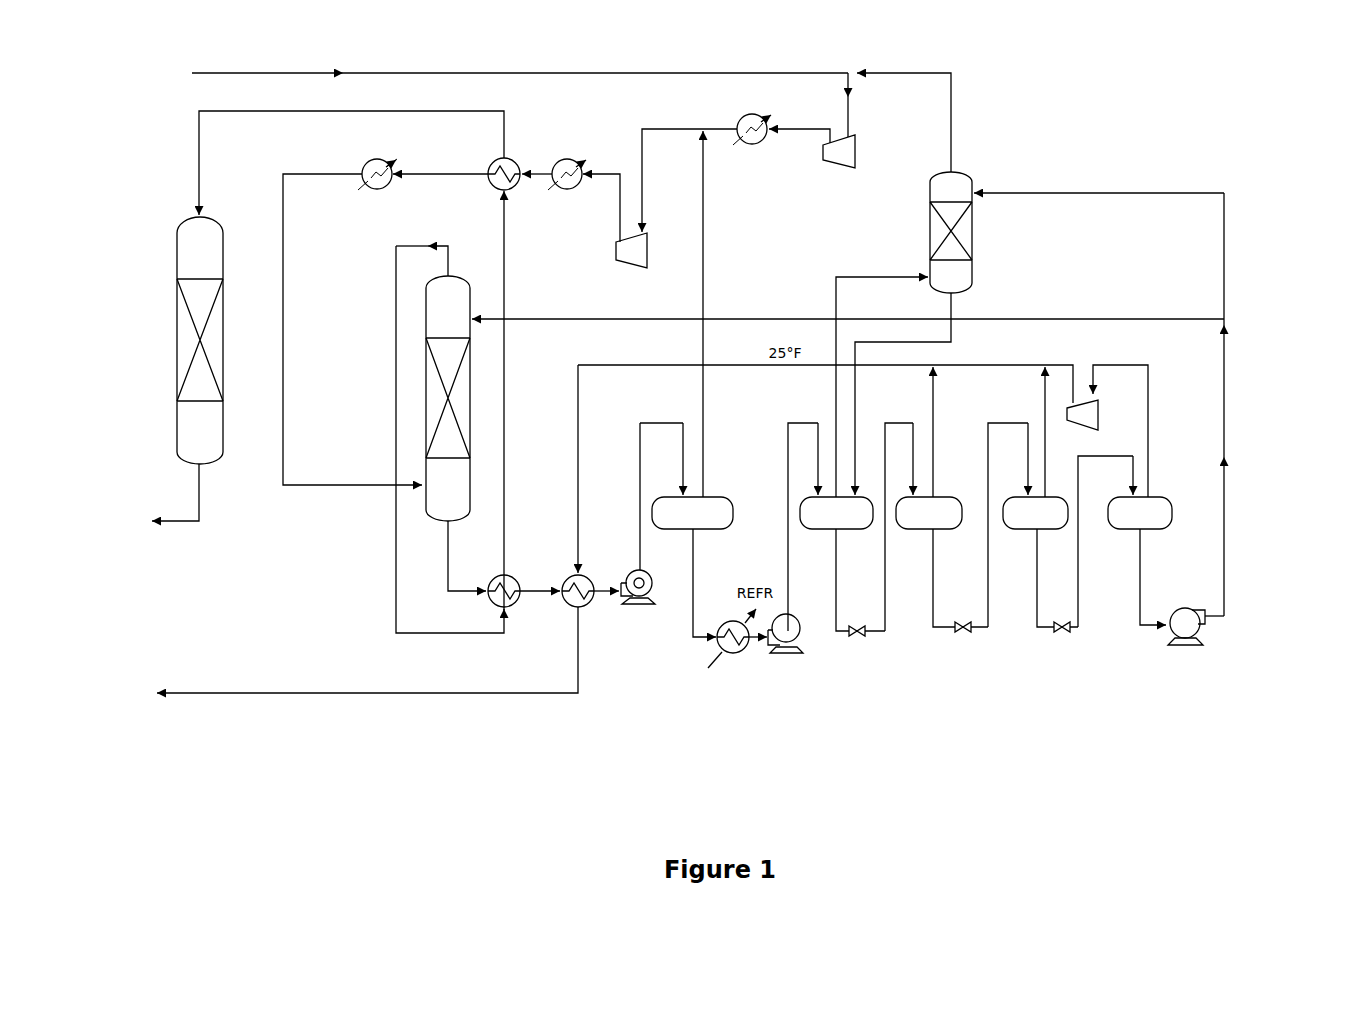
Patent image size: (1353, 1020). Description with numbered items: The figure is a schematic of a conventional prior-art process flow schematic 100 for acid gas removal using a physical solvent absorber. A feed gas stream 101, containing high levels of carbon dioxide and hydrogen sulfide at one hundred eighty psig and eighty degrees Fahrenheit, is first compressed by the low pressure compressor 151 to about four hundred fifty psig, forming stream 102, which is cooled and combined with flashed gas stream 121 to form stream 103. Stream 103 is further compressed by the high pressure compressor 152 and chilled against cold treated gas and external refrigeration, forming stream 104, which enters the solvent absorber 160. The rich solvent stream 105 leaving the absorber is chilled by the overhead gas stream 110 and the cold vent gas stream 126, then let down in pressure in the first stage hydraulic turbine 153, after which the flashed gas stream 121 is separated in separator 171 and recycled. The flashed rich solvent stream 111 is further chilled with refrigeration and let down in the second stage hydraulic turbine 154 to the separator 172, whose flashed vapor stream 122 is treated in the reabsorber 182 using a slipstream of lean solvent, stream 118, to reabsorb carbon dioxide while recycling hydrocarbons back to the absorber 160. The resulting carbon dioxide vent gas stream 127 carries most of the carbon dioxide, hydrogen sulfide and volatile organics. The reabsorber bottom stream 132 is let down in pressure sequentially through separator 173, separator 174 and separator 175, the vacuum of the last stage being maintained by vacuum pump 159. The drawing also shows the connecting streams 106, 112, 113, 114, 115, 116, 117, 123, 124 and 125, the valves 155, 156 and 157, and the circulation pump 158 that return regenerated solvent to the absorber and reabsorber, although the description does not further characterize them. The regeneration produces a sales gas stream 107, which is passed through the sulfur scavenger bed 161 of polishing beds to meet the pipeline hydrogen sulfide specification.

The process flow schematic 100 is at (1244, 90).
The feed gas stream 101 is at (316, 68).
The compressed feed gas stream 102 is at (813, 129).
The combined gas stream 103 is at (675, 128).
The chilled compressed gas stream 104 is at (310, 173).
The rich solvent stream 105 is at (448, 578).
The treated gas stream to polishing beds 106 is at (238, 104).
The sales gas stream 107 is at (191, 523).
The overhead gas stream 110 is at (396, 577).
The flashed rich solvent stream 111 is at (693, 641).
The liquid stream from 175 psig flash drum 112 is at (836, 573).
The liquid stream from 75 psig flash drum 113 is at (931, 573).
The liquid stream from 1 psig flash drum 114 is at (1035, 573).
The lean solvent stream from -4 psig flash drum 115 is at (1138, 573).
The circulation pump discharge stream 116 is at (1224, 433).
The lean solvent stream to absorber 117 is at (1142, 319).
The lean solvent slipstream 118 is at (1087, 193).
The flashed gas stream 121 is at (703, 215).
The flashed vapor stream 122 is at (835, 383).
The flash vapor stream from 75 psig drum 123 is at (933, 383).
The flash vapor stream from 1 psig drum 124 is at (1045, 383).
The flash vapor stream from -4 psig drum 125 is at (1148, 434).
The cold vent gas stream 126 is at (578, 512).
The CO2 vent gas stream 127 is at (323, 692).
The reabsorber bottom stream 132 is at (951, 342).
The low pressure compressor 151 is at (857, 145).
The high pressure compressor 152 is at (616, 248).
The first stage hydraulic turbine 153 is at (636, 604).
The second stage hydraulic turbine 154 is at (800, 649).
The letdown valve 155 is at (853, 634).
The letdown valve 156 is at (967, 630).
The letdown valve 157 is at (1065, 630).
The circulation pump 158 is at (1193, 665).
The vacuum pump 159 is at (1100, 404).
The solvent absorber 160 is at (470, 282).
The sulfur scavenger bed 161 is at (177, 374).
The separator 171 is at (725, 496).
The separator 172 is at (820, 530).
The separator 173 is at (913, 530).
The separator 174 is at (1012, 530).
The separator 175 is at (1113, 530).
The reabsorber 182 is at (930, 220).